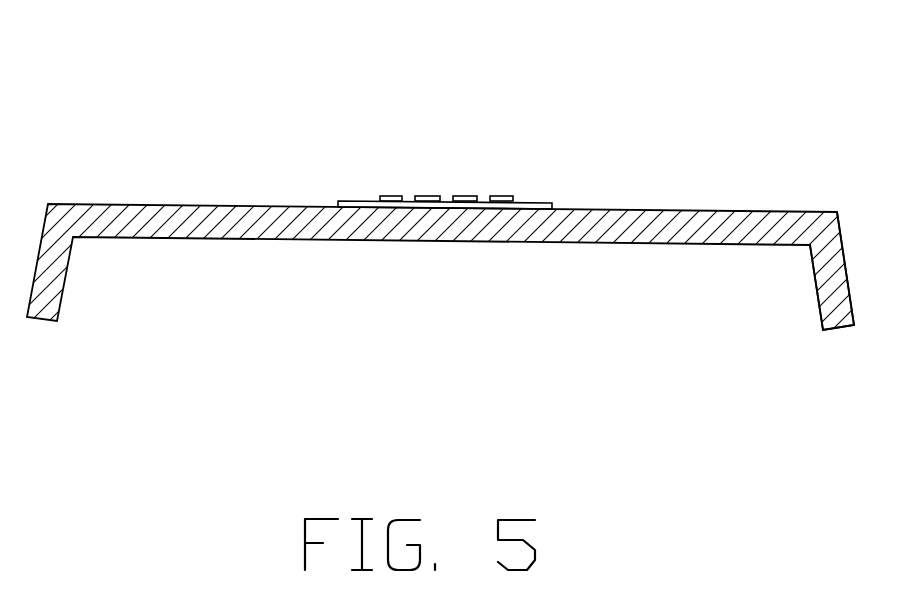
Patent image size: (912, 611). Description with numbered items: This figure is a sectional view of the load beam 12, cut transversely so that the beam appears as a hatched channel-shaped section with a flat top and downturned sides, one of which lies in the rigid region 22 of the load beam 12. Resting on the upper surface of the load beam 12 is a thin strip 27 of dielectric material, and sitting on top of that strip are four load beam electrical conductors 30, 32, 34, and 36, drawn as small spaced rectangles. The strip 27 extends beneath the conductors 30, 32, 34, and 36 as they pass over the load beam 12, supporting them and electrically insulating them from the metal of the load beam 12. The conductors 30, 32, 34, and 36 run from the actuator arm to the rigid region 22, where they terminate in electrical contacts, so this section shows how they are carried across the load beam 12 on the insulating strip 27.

The load beam 12 is at (776, 163).
The rigid region 22 is at (817, 292).
The strip 27 is at (552, 204).
The load beam electrical conductor 30 is at (381, 196).
The load beam electrical conductor 32 is at (428, 196).
The load beam electrical conductor 34 is at (460, 196).
The load beam electrical conductor 36 is at (512, 196).